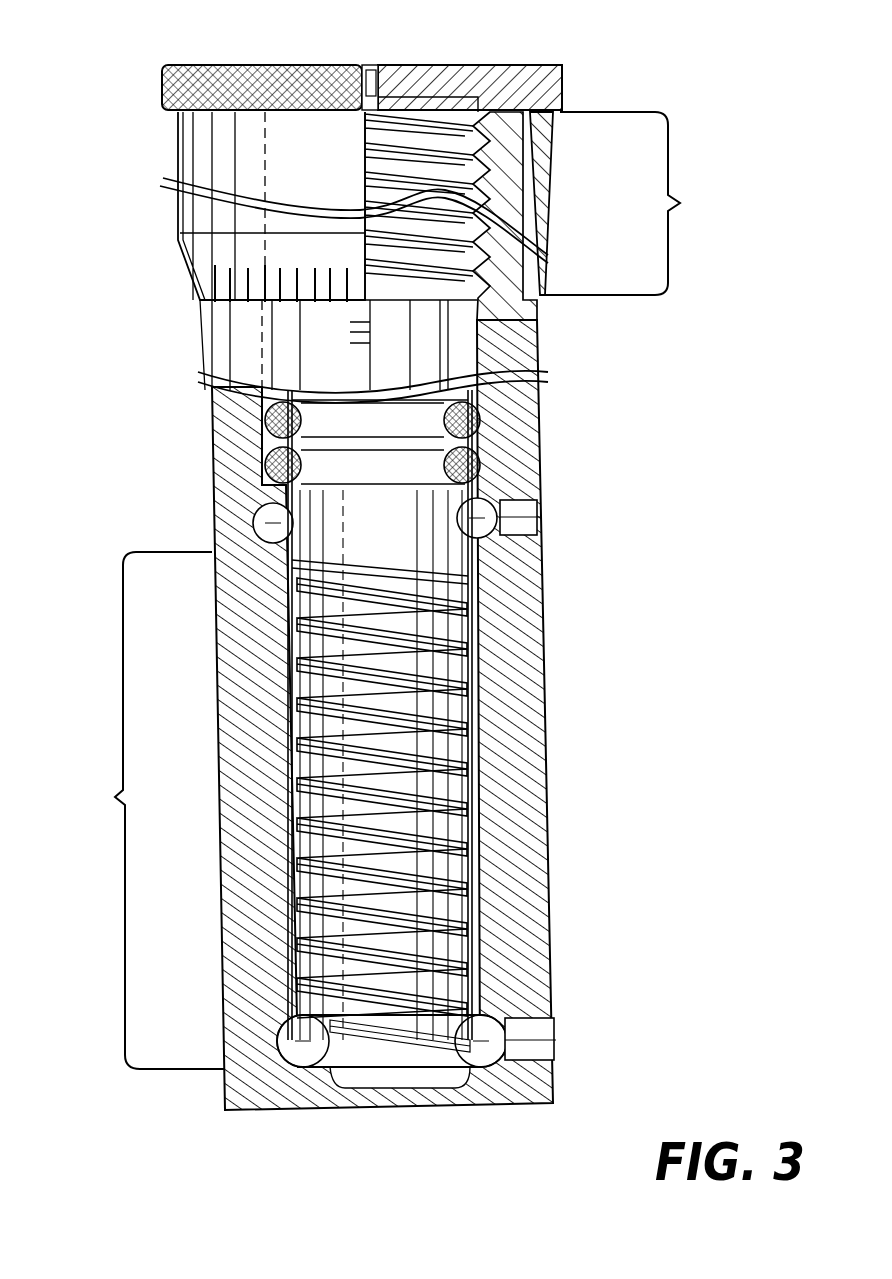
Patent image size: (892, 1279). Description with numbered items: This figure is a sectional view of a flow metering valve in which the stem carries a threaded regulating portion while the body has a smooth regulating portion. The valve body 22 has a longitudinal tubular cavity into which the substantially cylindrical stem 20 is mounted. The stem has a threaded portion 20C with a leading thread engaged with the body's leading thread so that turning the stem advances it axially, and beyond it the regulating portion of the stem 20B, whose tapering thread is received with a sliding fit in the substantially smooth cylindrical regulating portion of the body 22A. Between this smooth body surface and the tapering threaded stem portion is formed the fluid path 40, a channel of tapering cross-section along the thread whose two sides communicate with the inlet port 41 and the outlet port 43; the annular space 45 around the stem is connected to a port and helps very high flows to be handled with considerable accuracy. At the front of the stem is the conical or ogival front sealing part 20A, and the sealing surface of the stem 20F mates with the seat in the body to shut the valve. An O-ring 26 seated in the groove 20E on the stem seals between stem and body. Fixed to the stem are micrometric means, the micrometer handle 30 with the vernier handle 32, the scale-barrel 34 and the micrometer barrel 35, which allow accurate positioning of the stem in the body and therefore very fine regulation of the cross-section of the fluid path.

The micrometer handle 30 is at (318, 60).
The vernier handle 32 is at (165, 82).
The scale-barrel 34 is at (193, 148).
The threaded portion of the stem with leading thread 20C is at (609, 216).
The micrometer barrel 35 is at (234, 342).
The stem 20 is at (425, 346).
The O-ring 26 is at (482, 417).
The outlet port 43 is at (528, 515).
The annular space around the stem connected to outlet port 45 is at (256, 524).
The groove for O-ring on the stem 20E is at (406, 470).
The sealing surface of the stem 20F is at (434, 570).
The body of the valve 22 is at (546, 640).
The regulating portion of the body 22A is at (490, 738).
The regulating portion of the stem 20B is at (580, 792).
The fluid path 40 is at (465, 915).
The inlet port 41 is at (552, 1030).
The conical/ogival front sealing part of the stem 20A is at (352, 1050).